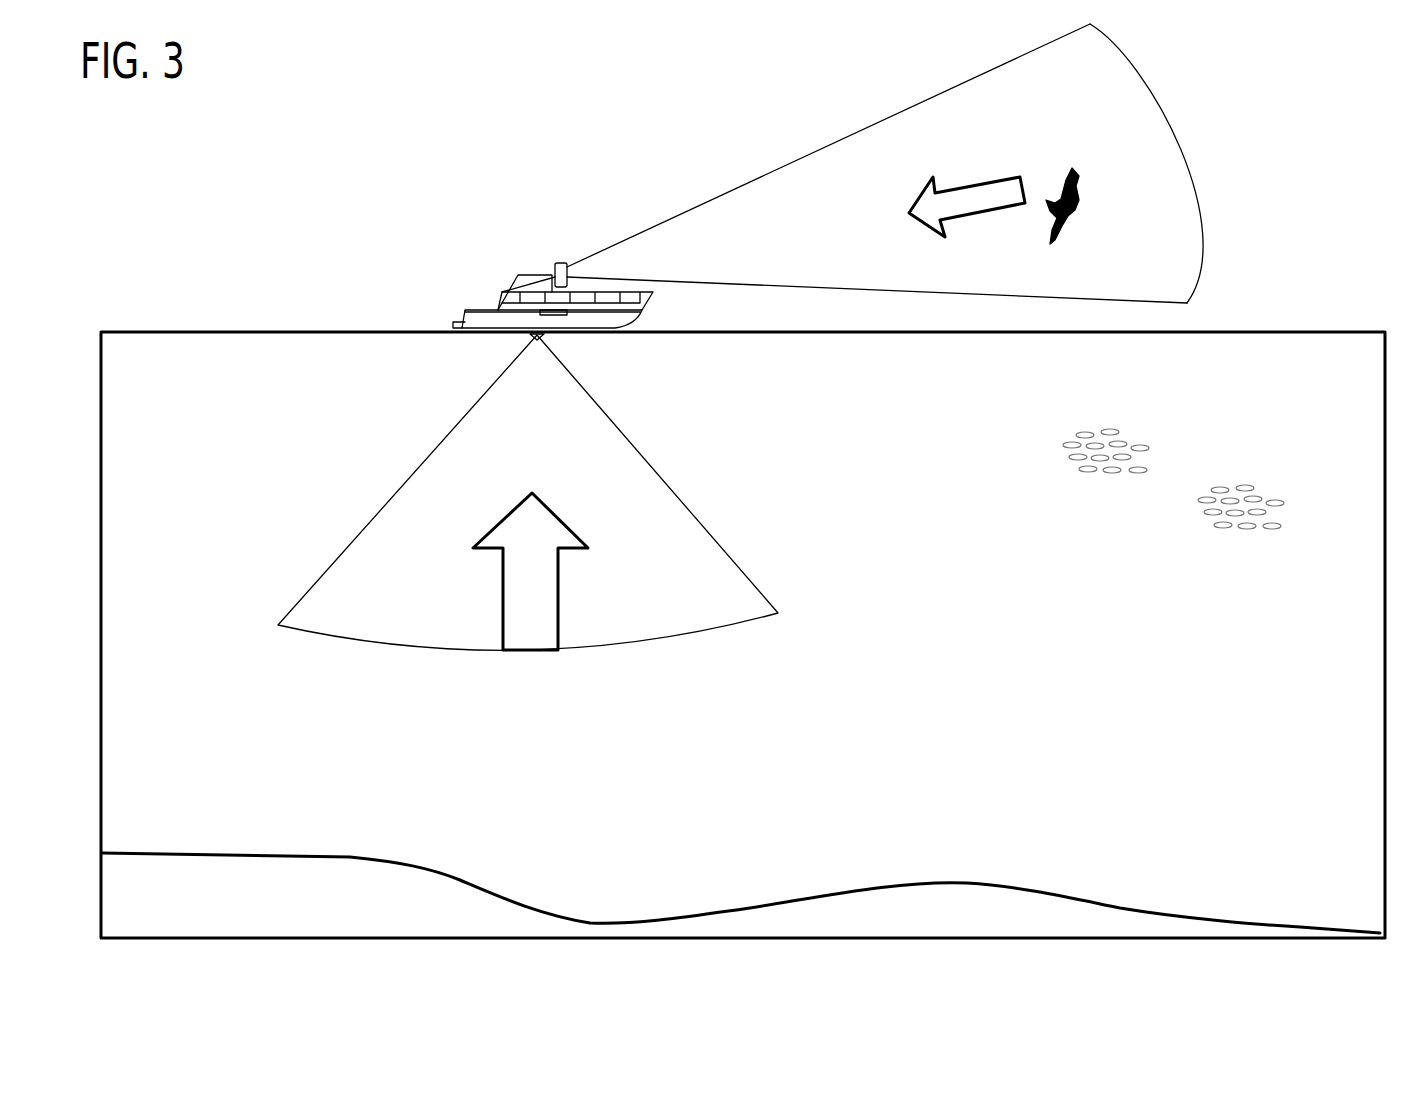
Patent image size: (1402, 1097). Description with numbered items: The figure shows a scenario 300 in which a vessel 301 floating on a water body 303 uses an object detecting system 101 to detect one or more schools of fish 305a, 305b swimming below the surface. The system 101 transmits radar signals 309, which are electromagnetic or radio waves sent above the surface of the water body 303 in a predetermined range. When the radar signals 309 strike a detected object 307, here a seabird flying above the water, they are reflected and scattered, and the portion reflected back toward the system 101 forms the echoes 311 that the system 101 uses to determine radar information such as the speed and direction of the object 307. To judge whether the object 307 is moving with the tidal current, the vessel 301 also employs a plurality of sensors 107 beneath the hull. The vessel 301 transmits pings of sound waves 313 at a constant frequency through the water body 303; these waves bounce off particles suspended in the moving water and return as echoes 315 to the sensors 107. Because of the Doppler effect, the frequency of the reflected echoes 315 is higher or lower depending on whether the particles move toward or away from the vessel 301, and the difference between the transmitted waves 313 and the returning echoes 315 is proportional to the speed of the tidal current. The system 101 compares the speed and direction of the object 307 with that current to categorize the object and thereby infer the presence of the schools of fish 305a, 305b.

The scenario 300 is at (334, 185).
The object detecting system 101 is at (555, 264).
The vessel 301 is at (500, 293).
The radar signals 309 is at (767, 285).
The water body 303 is at (1185, 331).
The detected object 307 is at (1073, 175).
The echoes 311 is at (990, 177).
The plurality of sensors 107 is at (527, 338).
The sound waves 313 is at (412, 477).
The reflected echoes 315 is at (550, 510).
The school of fish 305a is at (1110, 423).
The school of fish 305b is at (1240, 480).